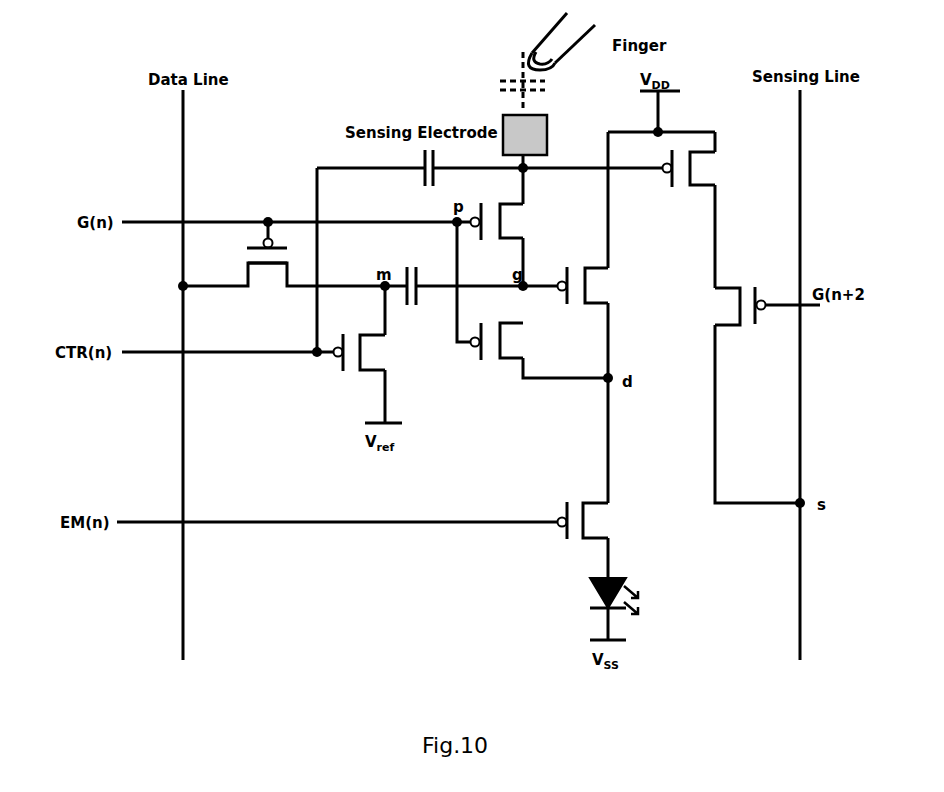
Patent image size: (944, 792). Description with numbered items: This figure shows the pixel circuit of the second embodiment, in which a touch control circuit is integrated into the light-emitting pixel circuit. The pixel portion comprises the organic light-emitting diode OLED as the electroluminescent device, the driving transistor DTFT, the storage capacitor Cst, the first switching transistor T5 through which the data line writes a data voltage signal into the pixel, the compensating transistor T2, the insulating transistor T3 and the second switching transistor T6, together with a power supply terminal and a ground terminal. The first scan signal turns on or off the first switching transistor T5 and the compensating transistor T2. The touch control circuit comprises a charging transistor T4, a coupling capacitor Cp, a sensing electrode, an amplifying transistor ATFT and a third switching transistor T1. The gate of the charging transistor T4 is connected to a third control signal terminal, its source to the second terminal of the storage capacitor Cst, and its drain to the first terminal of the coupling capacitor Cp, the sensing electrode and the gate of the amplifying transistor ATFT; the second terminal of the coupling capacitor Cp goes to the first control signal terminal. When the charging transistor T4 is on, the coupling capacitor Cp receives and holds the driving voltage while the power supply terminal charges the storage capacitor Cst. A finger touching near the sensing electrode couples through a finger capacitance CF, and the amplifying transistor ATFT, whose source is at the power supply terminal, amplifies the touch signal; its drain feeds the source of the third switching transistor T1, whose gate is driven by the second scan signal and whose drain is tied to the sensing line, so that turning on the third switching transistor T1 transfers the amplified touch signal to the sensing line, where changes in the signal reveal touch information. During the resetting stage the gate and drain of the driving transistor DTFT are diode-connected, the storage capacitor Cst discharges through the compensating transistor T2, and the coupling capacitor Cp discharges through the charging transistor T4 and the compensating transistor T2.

The third switching transistor T1 is at (767, 306).
The compensating transistor T2 is at (500, 341).
The insulating transistor T3 is at (588, 520).
The charging transistor T4 is at (500, 221).
The first switching transistor T5 is at (267, 258).
The second switching transistor T6 is at (363, 352).
The driving transistor DTFT is at (599, 285).
The amplifying transistor ATFT is at (702, 168).
The storage capacitor Cst is at (409, 302).
The coupling capacitor Cp is at (423, 184).
The finger capacitor CF is at (533, 92).
The organic light-emitting diode OLED is at (640, 598).